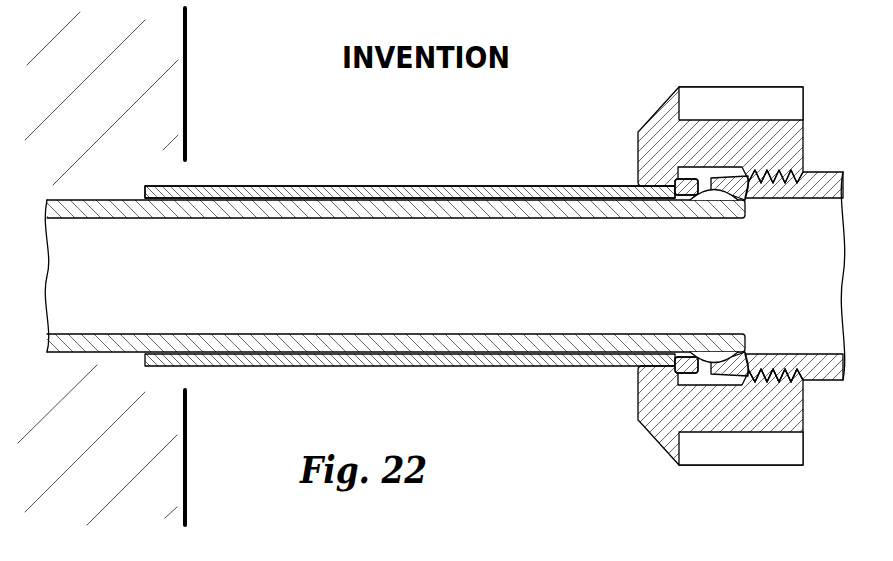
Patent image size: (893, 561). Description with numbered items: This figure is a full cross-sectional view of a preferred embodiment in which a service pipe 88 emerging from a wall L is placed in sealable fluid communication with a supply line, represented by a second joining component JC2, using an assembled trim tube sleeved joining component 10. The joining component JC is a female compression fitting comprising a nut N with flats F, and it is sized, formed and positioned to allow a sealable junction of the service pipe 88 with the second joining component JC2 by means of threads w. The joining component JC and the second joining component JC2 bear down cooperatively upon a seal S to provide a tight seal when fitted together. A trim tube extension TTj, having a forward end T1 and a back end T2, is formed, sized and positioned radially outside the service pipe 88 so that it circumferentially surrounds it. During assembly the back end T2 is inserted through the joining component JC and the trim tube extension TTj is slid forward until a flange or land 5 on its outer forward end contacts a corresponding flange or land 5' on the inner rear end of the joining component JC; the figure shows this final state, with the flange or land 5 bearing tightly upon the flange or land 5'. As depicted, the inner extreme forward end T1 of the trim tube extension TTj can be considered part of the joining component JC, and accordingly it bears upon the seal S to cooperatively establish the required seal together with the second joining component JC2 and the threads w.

The wall L is at (101, 266).
The back end T2 is at (230, 184).
The trim tube extension TTj is at (403, 186).
The forward end T1 is at (583, 185).
The flats F is at (741, 103).
The joining component JC is at (782, 134).
The seal S is at (712, 197).
The second joining component JC2 is at (797, 190).
The service pipe 88 is at (463, 228).
The flange or land 5 is at (699, 276).
The threads w is at (783, 372).
The flange or land 5' is at (668, 285).
The trim tube sleeved joining component 10 is at (645, 413).
The nut N is at (700, 472).